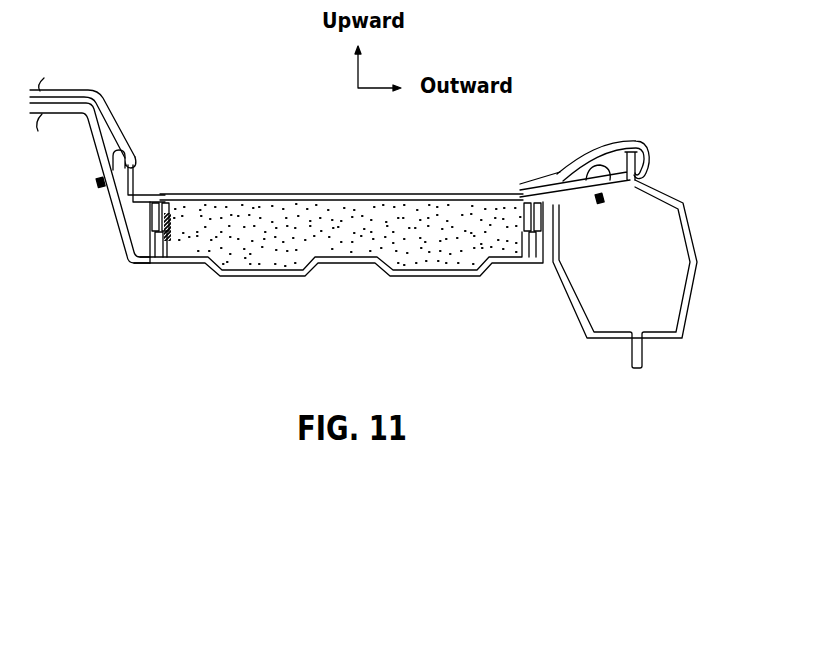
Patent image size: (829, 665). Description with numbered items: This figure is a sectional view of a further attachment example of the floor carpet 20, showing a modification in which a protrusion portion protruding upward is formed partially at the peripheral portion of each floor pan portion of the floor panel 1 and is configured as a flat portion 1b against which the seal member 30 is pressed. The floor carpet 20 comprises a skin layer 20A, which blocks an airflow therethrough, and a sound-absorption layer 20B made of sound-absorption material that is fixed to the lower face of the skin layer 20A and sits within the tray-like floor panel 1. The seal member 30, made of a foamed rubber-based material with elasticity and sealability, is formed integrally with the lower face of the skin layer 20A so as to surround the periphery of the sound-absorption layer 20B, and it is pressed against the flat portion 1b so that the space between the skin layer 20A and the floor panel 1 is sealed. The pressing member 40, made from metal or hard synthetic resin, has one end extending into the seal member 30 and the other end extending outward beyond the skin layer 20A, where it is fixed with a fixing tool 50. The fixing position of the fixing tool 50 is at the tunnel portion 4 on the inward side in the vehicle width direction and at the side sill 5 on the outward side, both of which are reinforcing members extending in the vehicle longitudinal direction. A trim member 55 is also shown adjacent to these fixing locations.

The floor panel 1 is at (338, 275).
The flat portion 1b is at (170, 230).
The tunnel portion 4 is at (65, 116).
The side sill 5 is at (690, 236).
The floor carpet 20 is at (341, 180).
The skin layer 20A is at (265, 196).
The sound-absorption layer 20B is at (316, 208).
The seal member 30 is at (152, 223).
The pressing member 40 is at (137, 202).
The fixing tool 50 is at (97, 183).
The trim member 55 is at (108, 98).